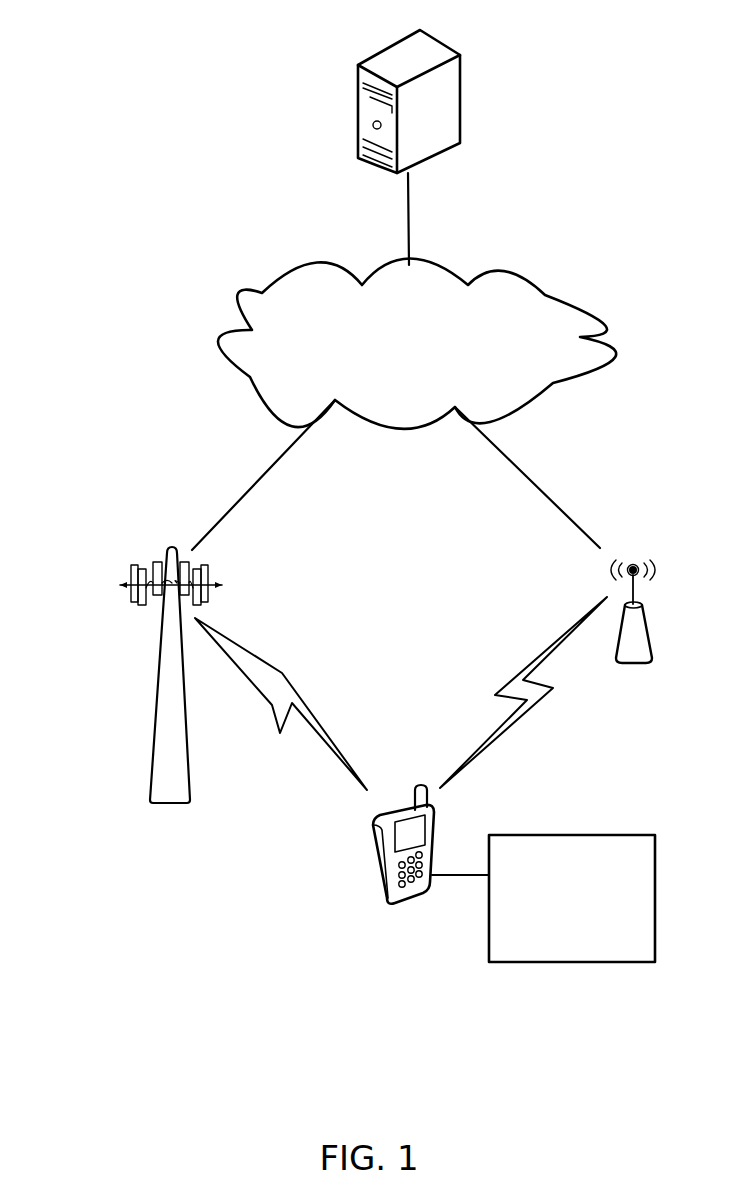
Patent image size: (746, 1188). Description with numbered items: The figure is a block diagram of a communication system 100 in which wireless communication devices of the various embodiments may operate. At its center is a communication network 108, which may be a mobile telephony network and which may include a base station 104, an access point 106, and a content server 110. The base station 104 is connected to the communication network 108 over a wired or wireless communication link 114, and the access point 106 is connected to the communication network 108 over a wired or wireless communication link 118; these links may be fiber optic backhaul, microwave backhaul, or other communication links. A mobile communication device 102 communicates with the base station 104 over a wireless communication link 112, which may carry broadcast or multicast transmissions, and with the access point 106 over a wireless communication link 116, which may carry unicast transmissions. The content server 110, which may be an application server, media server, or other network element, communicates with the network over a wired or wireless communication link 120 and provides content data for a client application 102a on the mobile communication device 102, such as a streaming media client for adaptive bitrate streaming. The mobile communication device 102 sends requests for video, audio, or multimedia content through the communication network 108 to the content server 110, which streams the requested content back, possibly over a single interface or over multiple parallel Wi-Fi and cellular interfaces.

The communication system 100 is at (92, 118).
The mobile communication device 102 is at (373, 877).
The client application 102a is at (543, 898).
The base station 104 is at (152, 750).
The access point 106 is at (638, 667).
The communication network 108 is at (241, 296).
The content server 110 is at (356, 98).
The wireless communication link 112 is at (288, 678).
The communication link 114 is at (247, 490).
The wireless communication link 116 is at (551, 640).
The communication link 118 is at (530, 475).
The communication link 120 is at (408, 217).